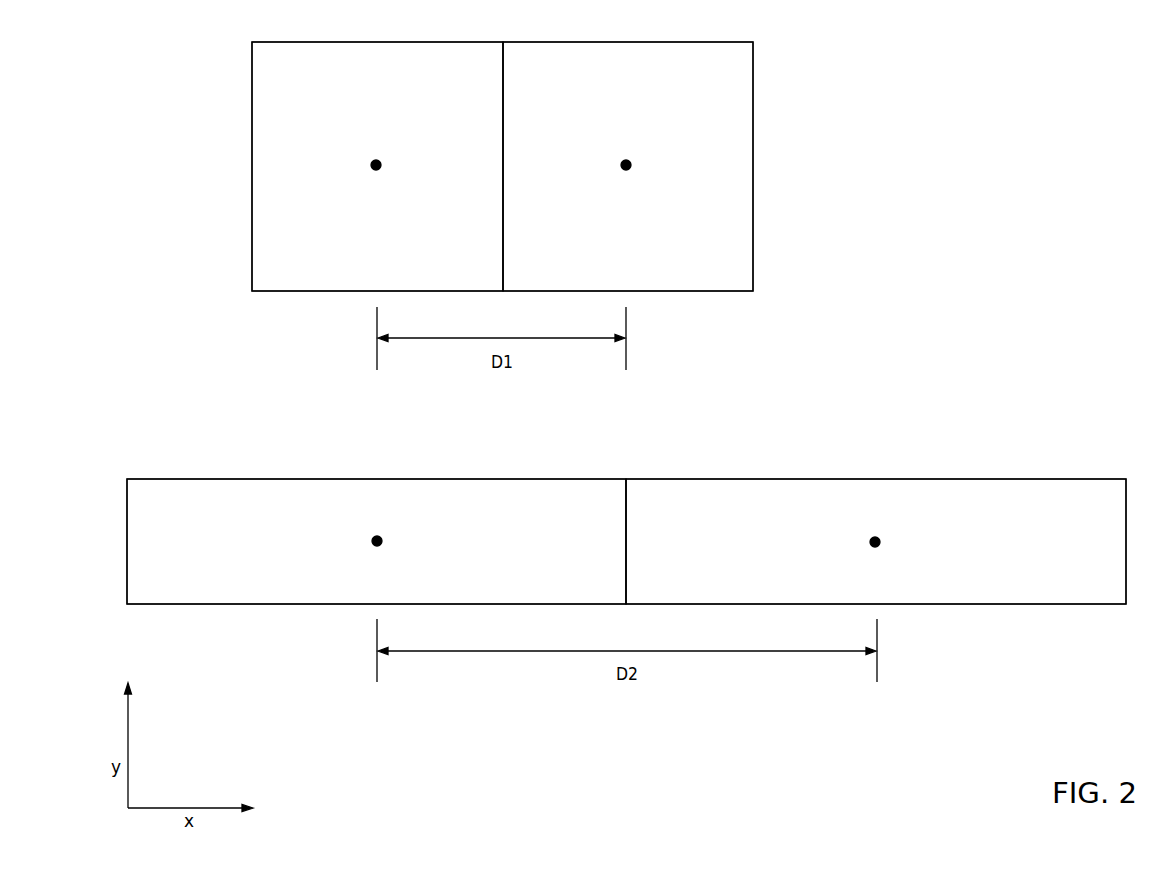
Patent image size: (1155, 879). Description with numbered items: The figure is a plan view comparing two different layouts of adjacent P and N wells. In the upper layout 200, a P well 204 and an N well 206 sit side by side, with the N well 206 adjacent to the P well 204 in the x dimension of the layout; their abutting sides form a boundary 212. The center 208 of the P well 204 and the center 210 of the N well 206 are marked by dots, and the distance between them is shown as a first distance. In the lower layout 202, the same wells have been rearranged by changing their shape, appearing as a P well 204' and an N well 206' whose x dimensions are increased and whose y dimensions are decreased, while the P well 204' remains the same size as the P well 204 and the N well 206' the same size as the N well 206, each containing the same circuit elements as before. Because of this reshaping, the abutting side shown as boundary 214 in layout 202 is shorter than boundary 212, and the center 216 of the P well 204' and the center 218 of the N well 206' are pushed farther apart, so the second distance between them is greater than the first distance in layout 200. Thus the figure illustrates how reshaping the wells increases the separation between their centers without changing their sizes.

The layout 200 is at (780, 53).
The layout 202 is at (873, 443).
The P well 204 is at (377, 166).
The N well 206 is at (628, 166).
The P well 204' is at (376, 541).
The N well 206' is at (876, 541).
The center 208 is at (381, 165).
The center 210 is at (631, 165).
The boundary 212 is at (503, 215).
The boundary 214 is at (627, 565).
The center 216 is at (382, 541).
The center 218 is at (880, 542).